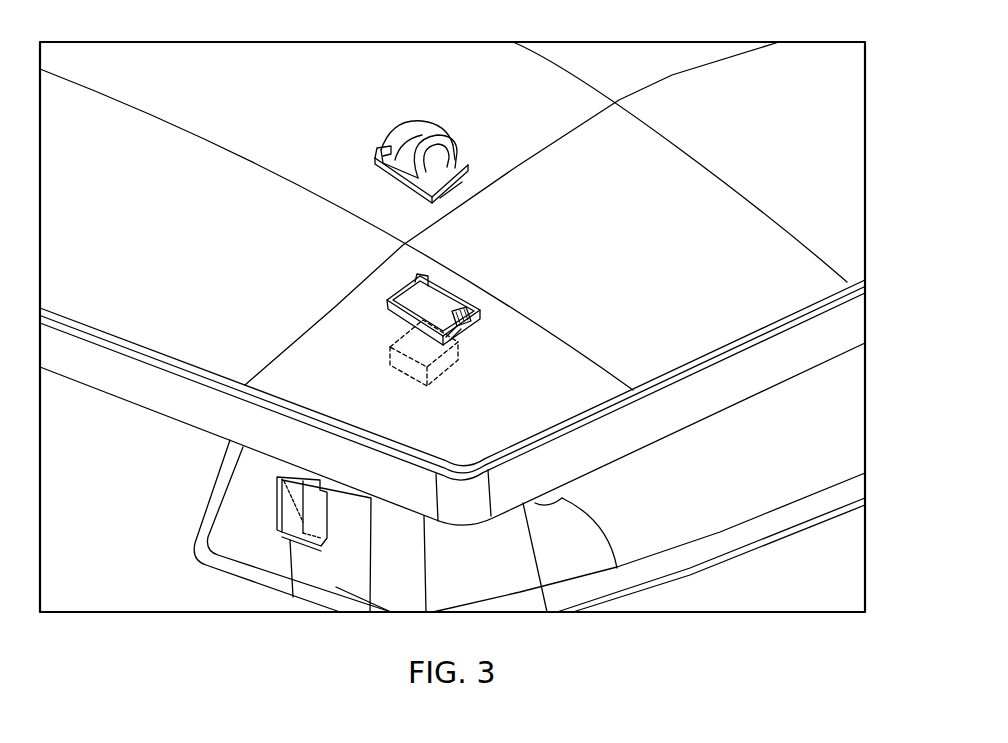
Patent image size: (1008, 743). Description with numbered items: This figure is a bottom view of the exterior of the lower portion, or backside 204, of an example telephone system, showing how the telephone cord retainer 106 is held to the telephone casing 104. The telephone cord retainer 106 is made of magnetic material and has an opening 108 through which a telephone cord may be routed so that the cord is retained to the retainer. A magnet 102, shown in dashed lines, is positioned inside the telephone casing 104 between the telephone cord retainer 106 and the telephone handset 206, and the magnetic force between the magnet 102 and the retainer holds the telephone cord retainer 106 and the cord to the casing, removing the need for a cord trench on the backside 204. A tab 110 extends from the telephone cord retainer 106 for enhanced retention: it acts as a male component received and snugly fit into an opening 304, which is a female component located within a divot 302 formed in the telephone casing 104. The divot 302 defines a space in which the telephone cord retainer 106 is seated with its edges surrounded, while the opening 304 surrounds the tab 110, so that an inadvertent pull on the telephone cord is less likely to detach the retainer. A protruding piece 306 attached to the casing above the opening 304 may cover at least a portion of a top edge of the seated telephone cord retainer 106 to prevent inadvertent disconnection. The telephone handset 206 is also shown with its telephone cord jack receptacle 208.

The magnet 102 is at (388, 350).
The telephone casing 104 is at (752, 378).
The telephone cord retainer 106 is at (376, 158).
The opening 108 is at (440, 148).
The tab 110 is at (450, 190).
The backside 204 is at (160, 345).
The telephone handset 206 is at (215, 488).
The telephone cord jack receptacle 208 is at (275, 530).
The divot 302 is at (390, 300).
The opening 304 is at (461, 331).
The protruding piece 306 is at (470, 320).